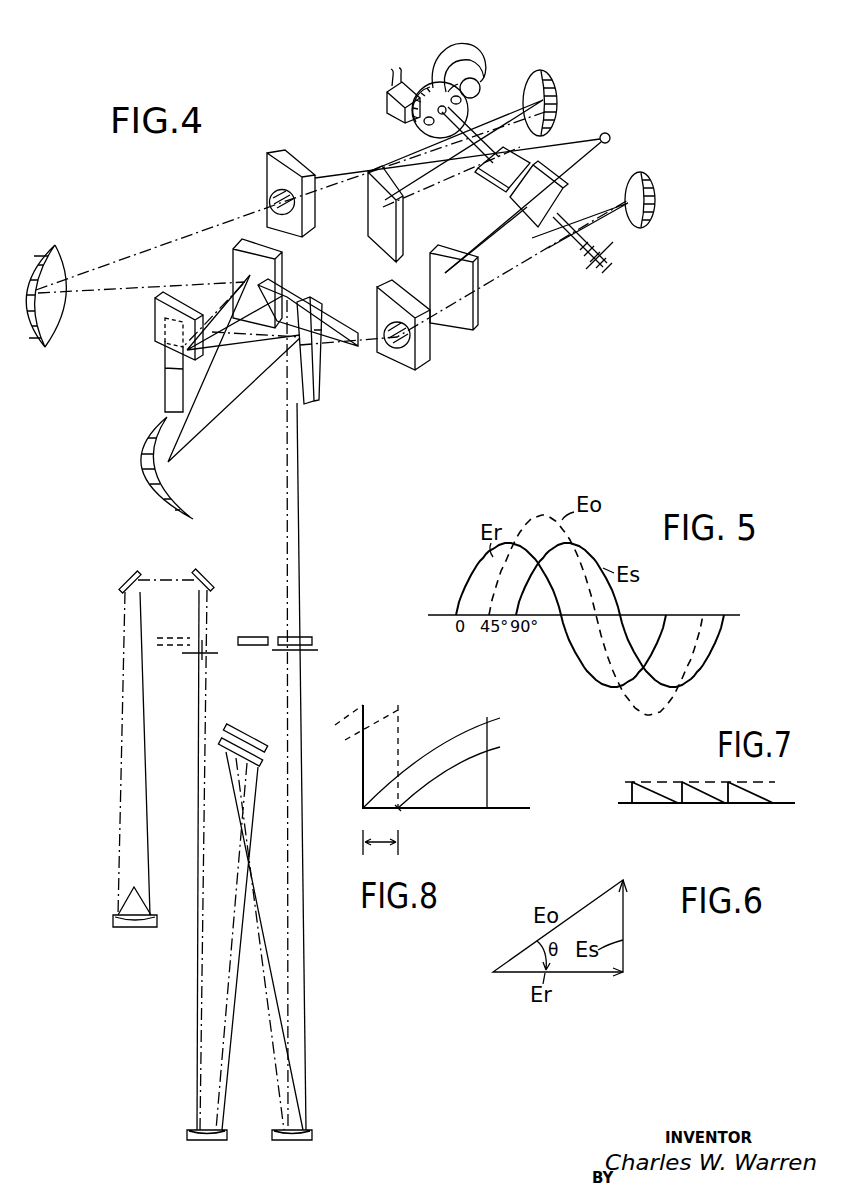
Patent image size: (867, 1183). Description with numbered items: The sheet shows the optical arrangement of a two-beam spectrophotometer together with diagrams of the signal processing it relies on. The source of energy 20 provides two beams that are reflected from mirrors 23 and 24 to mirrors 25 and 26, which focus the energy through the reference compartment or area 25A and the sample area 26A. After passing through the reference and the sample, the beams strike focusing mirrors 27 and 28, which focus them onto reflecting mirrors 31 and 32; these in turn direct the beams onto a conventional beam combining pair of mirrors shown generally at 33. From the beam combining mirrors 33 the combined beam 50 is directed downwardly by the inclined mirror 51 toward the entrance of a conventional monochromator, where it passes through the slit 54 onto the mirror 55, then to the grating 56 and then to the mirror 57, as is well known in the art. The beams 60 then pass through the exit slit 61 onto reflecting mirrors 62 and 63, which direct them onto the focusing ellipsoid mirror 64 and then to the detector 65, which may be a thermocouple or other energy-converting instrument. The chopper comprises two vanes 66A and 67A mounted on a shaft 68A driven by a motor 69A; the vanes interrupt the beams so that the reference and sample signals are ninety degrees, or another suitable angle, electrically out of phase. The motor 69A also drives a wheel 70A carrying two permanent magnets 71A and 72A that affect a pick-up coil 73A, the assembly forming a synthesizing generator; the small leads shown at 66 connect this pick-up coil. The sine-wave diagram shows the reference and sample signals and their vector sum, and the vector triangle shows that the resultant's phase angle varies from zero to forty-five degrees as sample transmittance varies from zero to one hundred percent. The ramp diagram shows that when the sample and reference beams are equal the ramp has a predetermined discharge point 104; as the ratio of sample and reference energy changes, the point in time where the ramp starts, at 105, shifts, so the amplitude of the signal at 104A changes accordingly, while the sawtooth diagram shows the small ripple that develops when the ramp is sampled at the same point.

In FIG. 4, the source of energy 20 is at (610, 138).
In FIG. 4, the mirror 23 is at (475, 312).
In FIG. 4, the mirror 24 is at (403, 216).
In FIG. 4, the mirror 25 is at (546, 78).
In FIG. 4, the reference compartment or area 25A is at (312, 214).
In FIG. 4, the mirror 26 is at (649, 178).
In FIG. 4, the sample area 26A is at (378, 320).
In FIG. 4, the focusing mirror 27 is at (58, 270).
In FIG. 4, the focusing mirror 28 is at (188, 500).
In FIG. 4, the reflecting mirror 31 is at (240, 262).
In FIG. 4, the reflecting mirror 32 is at (305, 365).
In FIG. 4, the beam combining pair of mirrors 33 is at (140, 334).
In FIG. 4, the combined beam 50 is at (242, 322).
In FIG. 4, the inclined mirror 51 is at (325, 298).
In FIG. 4, the slit 54 is at (318, 650).
In FIG. 4, the mirror 55 is at (311, 1130).
In FIG. 4, the grating 56 is at (257, 766).
In FIG. 4, the mirror 57 is at (190, 1130).
In FIG. 4, the beams 60 is at (204, 710).
In FIG. 4, the exit slit 61 is at (205, 653).
In FIG. 4, the reflecting mirror 62 is at (216, 560).
In FIG. 4, the reflecting mirror 63 is at (126, 576).
In FIG. 4, the focusing ellipsoid mirror 64 is at (129, 928).
In FIG. 4, the detector 65 is at (132, 887).
In FIG. 4, the leads 66 is at (373, 106).
In FIG. 4, the vane 66A is at (517, 156).
In FIG. 4, the vane 67A is at (563, 181).
In FIG. 4, the shaft 68A is at (468, 135).
In FIG. 4, the motor 69A is at (458, 52).
In FIG. 4, the wheel 70A is at (440, 88).
In FIG. 4, the permanent magnet 71A is at (461, 103).
In FIG. 4, the permanent magnet 72A is at (420, 126).
In FIG. 4, the pick-up coil 73A is at (378, 92).
In FIG. 8, the discharge point 104 is at (489, 732).
In FIG. 8, the signal amplitude 104A is at (487, 752).
In FIG. 8, the ramp start point 105 is at (398, 808).